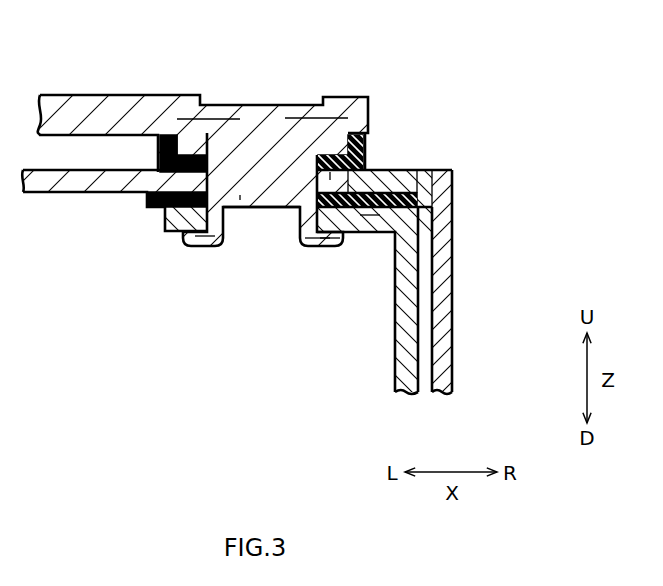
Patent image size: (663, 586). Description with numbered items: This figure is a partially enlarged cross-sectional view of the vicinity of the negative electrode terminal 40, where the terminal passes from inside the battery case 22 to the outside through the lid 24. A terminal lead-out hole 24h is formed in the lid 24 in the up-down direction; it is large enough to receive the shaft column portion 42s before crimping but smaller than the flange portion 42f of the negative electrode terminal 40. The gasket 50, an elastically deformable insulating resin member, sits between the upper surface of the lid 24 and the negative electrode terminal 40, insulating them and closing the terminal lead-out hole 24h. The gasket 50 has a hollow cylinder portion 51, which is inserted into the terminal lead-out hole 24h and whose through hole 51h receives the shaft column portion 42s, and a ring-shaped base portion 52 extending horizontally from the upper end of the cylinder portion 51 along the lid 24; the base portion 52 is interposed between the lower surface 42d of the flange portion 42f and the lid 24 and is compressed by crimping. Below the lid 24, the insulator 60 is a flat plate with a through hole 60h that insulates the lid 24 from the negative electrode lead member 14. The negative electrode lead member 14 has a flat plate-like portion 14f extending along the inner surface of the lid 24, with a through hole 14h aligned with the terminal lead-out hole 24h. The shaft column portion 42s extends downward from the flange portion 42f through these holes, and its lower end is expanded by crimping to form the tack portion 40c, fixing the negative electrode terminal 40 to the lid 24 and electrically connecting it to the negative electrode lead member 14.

The negative electrode lead member 14 is at (420, 317).
The flat plate-like portion 14f is at (368, 220).
The through hole 14h is at (318, 230).
The battery case 22 is at (440, 363).
The lid 24 is at (420, 182).
The terminal lead-out hole 24h is at (327, 186).
The negative electrode terminal 40 is at (358, 88).
The tack portion 40c is at (306, 243).
The lower surface of the flange portion 42d is at (325, 153).
The flange portion 42f is at (195, 148).
The shaft column portion 42s is at (260, 185).
The gasket 50 is at (153, 148).
The cylinder portion 51 is at (202, 182).
The through hole 51h is at (250, 190).
The base portion 52 is at (355, 160).
The insulator 60 is at (138, 203).
The through hole 60h is at (205, 238).